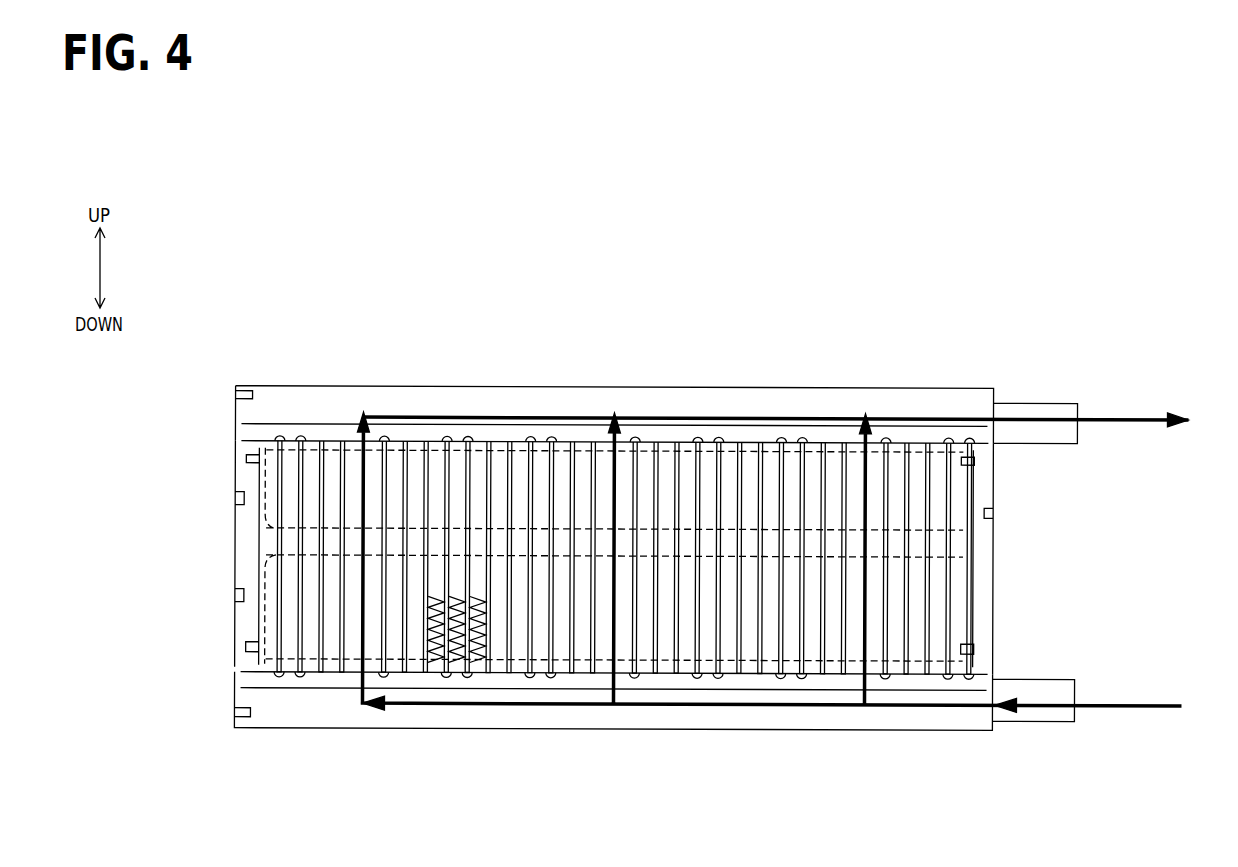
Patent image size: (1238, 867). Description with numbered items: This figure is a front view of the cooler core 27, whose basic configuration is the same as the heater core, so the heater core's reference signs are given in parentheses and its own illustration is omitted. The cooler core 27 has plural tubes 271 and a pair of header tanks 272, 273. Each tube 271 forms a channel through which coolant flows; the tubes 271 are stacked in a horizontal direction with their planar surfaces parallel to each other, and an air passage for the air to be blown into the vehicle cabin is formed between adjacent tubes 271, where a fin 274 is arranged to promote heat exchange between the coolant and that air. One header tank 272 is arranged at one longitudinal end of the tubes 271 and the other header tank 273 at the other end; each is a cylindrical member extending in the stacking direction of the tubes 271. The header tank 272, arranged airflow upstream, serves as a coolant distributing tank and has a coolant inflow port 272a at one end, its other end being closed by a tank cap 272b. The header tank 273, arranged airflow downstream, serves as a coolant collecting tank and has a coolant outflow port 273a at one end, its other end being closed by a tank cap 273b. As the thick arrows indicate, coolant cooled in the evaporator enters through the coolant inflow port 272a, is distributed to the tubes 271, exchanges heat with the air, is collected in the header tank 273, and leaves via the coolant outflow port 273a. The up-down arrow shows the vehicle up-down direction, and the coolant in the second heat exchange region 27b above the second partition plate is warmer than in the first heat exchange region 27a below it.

The cooler core 27 is at (982, 330).
The first heat exchange region 27a is at (240, 604).
The second heat exchange region 27b is at (240, 506).
The tubes 271 is at (322, 650).
The header tank 272 is at (725, 722).
The coolant inflow port 272a is at (1075, 697).
The tank cap 272b is at (233, 695).
The header tank 273 is at (425, 397).
The coolant outflow port 273a is at (1078, 430).
The tank cap 273b is at (224, 410).
The fin 274 is at (478, 658).